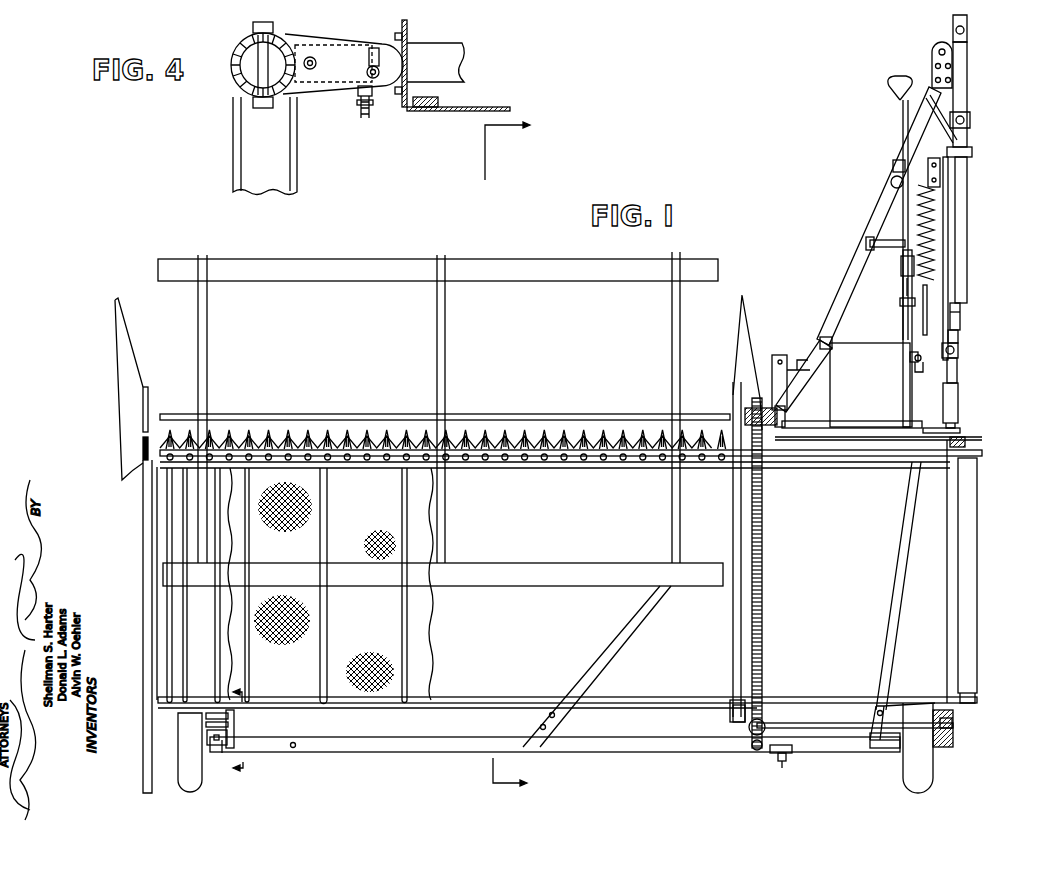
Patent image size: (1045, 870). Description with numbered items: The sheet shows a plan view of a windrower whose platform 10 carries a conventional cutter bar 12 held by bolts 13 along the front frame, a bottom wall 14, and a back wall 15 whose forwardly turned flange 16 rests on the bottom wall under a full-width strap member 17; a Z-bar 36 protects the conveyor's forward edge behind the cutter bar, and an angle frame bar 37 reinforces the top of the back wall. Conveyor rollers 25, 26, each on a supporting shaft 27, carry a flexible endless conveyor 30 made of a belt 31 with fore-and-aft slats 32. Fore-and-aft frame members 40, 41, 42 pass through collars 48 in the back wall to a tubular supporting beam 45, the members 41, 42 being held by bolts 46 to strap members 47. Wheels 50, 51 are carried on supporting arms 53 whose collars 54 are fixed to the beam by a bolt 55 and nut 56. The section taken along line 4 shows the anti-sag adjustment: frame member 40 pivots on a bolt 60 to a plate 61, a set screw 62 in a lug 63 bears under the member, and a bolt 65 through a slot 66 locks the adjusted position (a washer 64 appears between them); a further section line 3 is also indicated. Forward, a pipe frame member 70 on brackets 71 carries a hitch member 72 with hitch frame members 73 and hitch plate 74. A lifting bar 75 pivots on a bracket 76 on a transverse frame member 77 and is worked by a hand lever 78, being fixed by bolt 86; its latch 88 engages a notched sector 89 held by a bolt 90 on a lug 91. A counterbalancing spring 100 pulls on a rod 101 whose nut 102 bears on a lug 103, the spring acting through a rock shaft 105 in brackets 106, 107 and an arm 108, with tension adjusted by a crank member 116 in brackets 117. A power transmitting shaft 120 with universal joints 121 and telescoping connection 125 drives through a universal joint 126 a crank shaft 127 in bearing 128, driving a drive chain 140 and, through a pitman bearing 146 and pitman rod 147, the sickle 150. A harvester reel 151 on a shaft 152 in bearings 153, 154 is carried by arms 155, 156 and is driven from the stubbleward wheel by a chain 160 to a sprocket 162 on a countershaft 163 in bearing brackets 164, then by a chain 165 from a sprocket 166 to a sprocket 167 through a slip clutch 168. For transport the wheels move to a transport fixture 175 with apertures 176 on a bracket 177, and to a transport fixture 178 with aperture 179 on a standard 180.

In FIG. 4, the section line 3 is at (516, 148).
In FIG. 1, the section line 3 is at (516, 773).
In FIG. 1, the section line 4 is at (226, 727).
In FIG. 1, the platform 10 is at (136, 502).
In FIG. 1, the cutter bar 12 is at (512, 436).
In FIG. 1, the bolts 13 is at (486, 460).
In FIG. 4, the bottom wall 14 is at (460, 112).
In FIG. 1, the bottom wall 14 is at (558, 538).
In FIG. 4, the back wall 15 is at (408, 30).
In FIG. 1, the back wall 15 is at (492, 698).
In FIG. 4, the flange 16 is at (422, 112).
In FIG. 4, the strap member 17 is at (438, 100).
In FIG. 1, the conveyor roller 25 is at (170, 620).
In FIG. 1, the conveyor roller 26 is at (968, 597).
In FIG. 1, the supporting shaft 27 is at (183, 702).
In FIG. 1, the flexible endless conveyor 30 is at (358, 627).
In FIG. 1, the belt 31 is at (436, 648).
In FIG. 1, the slats 32 is at (400, 510).
In FIG. 1, the Z-bar 36 is at (590, 463).
In FIG. 1, the angle frame bar 37 is at (450, 708).
In FIG. 4, the frame member 40 is at (470, 57).
In FIG. 1, the frame member 40 is at (218, 646).
In FIG. 1, the frame member 41 is at (626, 613).
In FIG. 1, the frame member 42 is at (894, 610).
In FIG. 4, the tubular supporting beam 45 is at (272, 110).
In FIG. 1, the tubular supporting beam 45 is at (424, 753).
In FIG. 1, the bolts 46 is at (558, 722).
In FIG. 1, the strap members 47 is at (870, 720).
In FIG. 4, the collars 48 is at (407, 62).
In FIG. 1, the ground engaging wheel 50 is at (185, 775).
In FIG. 1, the ground engaging wheel 51 is at (930, 772).
In FIG. 4, the supporting arm 53 is at (233, 118).
In FIG. 4, the collar 54 is at (236, 52).
In FIG. 1, the collar 54 is at (224, 753).
In FIG. 4, the bolt 55 is at (263, 109).
In FIG. 1, the bolt 55 is at (219, 740).
In FIG. 4, the nut 56 is at (274, 28).
In FIG. 4, the bolt 60 is at (316, 57).
In FIG. 1, the bolt 60 is at (203, 743).
In FIG. 4, the plate 61 is at (318, 97).
In FIG. 1, the plate 61 is at (236, 729).
In FIG. 4, the set screw 62 is at (364, 118).
In FIG. 4, the lug 63 is at (358, 96).
In FIG. 4, the washer 64 is at (374, 103).
In FIG. 4, the bolt 65 is at (366, 70).
In FIG. 1, the bolt 65 is at (206, 720).
In FIG. 4, the slot 66 is at (375, 48).
In FIG. 1, the pipe frame member 70 is at (870, 385).
In FIG. 1, the brackets 71 is at (809, 376).
In FIG. 1, the hitch member 72 is at (864, 224).
In FIG. 1, the hitch frame members 73 is at (955, 105).
In FIG. 1, the hitch plate 74 is at (930, 56).
In FIG. 1, the bar 75 is at (903, 311).
In FIG. 1, the bracket 76 is at (900, 426).
In FIG. 1, the transverse frame member 77 is at (830, 428).
In FIG. 1, the hand lever 78 is at (903, 117).
In FIG. 1, the bolt 86 is at (914, 360).
In FIG. 1, the latch 88 is at (900, 300).
In FIG. 1, the notched sector 89 is at (893, 265).
In FIG. 1, the bolt 90 is at (868, 243).
In FIG. 1, the lug 91 is at (884, 284).
In FIG. 1, the counterbalancing spring 100 is at (942, 250).
In FIG. 1, the rod 101 is at (928, 300).
In FIG. 1, the nut 102 is at (961, 320).
In FIG. 1, the lug 103 is at (962, 312).
In FIG. 1, the rock shaft 105 is at (891, 183).
In FIG. 1, the bracket 106 is at (940, 170).
In FIG. 1, the bracket 107 is at (897, 163).
In FIG. 1, the arm 108 is at (936, 197).
In FIG. 1, the crank member 116 is at (918, 372).
In FIG. 1, the brackets 117 is at (910, 355).
In FIG. 1, the power transmitting shaft 120 is at (968, 258).
In FIG. 1, the universal joints 121 is at (968, 30).
In FIG. 1, the telescoping connection 125 is at (959, 337).
In FIG. 1, the universal joint 126 is at (960, 350).
In FIG. 1, the crank shaft 127 is at (958, 370).
In FIG. 1, the bearing 128 is at (959, 405).
In FIG. 1, the drive chain 140 is at (966, 443).
In FIG. 1, the pitman bearing 146 is at (961, 431).
In FIG. 1, the pitman rod 147 is at (843, 442).
In FIG. 1, the sickle 150 is at (597, 426).
In FIG. 1, the harvester reel 151 is at (388, 260).
In FIG. 1, the shaft 152 is at (235, 420).
In FIG. 1, the bearing 153 is at (150, 420).
In FIG. 1, the bearing 154 is at (732, 415).
In FIG. 1, the arm 155 is at (143, 533).
In FIG. 1, the arm 156 is at (742, 508).
In FIG. 1, the chain 160 is at (953, 740).
In FIG. 1, the sprocket 162 is at (952, 722).
In FIG. 1, the countershaft 163 is at (805, 722).
In FIG. 1, the bearing brackets 164 is at (955, 712).
In FIG. 1, the chain 165 is at (763, 586).
In FIG. 1, the sprocket 166 is at (765, 731).
In FIG. 1, the sprocket 167 is at (759, 405).
In FIG. 1, the slip clutch 168 is at (770, 430).
In FIG. 1, the transport fixture 175 is at (786, 416).
In FIG. 1, the apertures 176 is at (781, 356).
In FIG. 1, the bracket 177 is at (798, 360).
In FIG. 1, the transport fixture 178 is at (792, 755).
In FIG. 1, the aperture 179 is at (784, 766).
In FIG. 1, the standard 180 is at (772, 749).